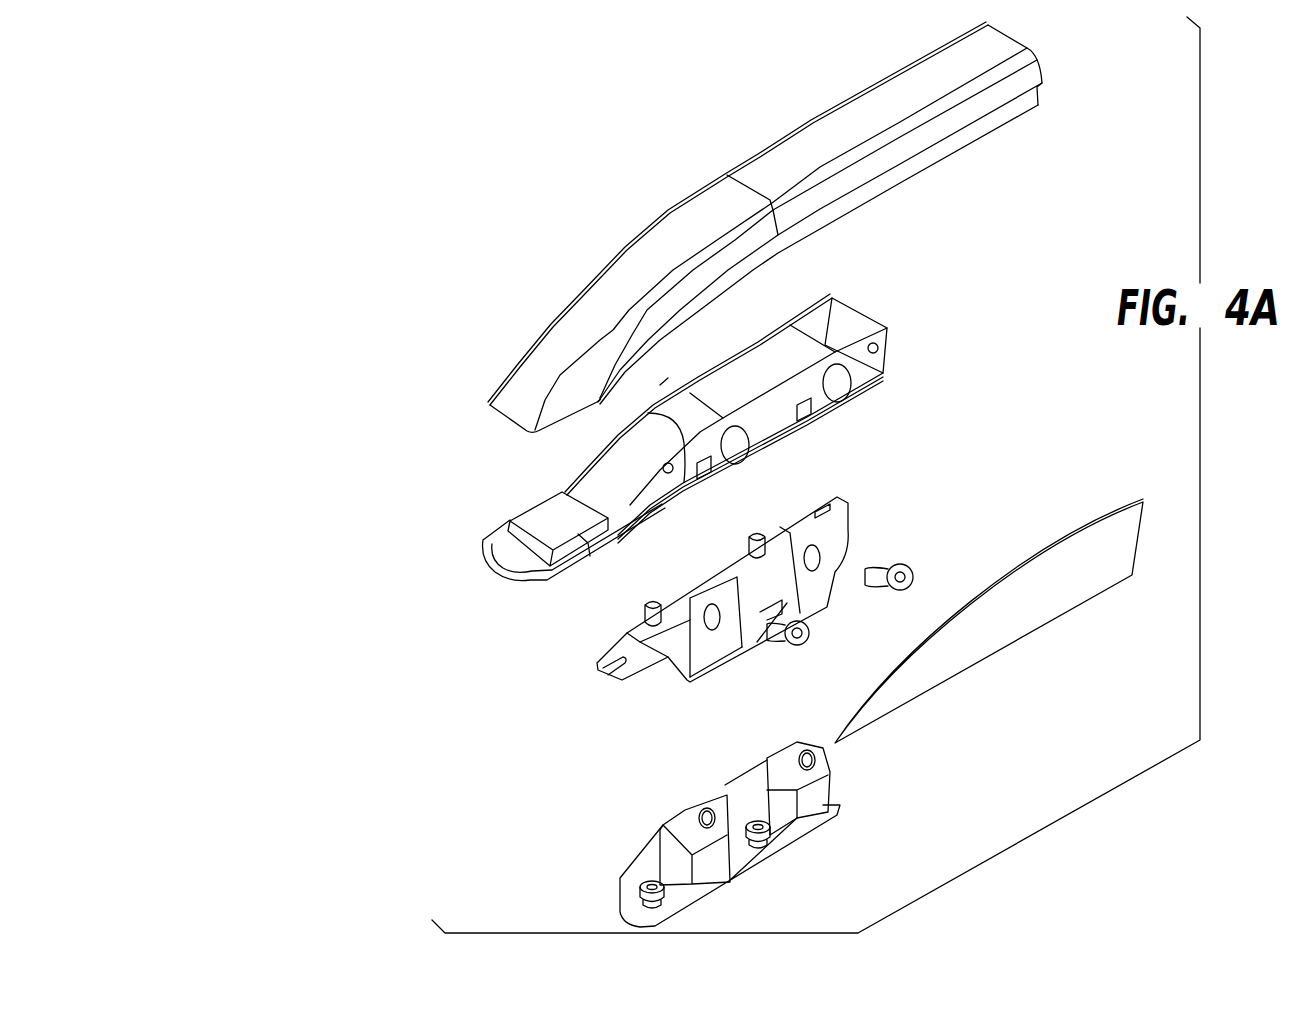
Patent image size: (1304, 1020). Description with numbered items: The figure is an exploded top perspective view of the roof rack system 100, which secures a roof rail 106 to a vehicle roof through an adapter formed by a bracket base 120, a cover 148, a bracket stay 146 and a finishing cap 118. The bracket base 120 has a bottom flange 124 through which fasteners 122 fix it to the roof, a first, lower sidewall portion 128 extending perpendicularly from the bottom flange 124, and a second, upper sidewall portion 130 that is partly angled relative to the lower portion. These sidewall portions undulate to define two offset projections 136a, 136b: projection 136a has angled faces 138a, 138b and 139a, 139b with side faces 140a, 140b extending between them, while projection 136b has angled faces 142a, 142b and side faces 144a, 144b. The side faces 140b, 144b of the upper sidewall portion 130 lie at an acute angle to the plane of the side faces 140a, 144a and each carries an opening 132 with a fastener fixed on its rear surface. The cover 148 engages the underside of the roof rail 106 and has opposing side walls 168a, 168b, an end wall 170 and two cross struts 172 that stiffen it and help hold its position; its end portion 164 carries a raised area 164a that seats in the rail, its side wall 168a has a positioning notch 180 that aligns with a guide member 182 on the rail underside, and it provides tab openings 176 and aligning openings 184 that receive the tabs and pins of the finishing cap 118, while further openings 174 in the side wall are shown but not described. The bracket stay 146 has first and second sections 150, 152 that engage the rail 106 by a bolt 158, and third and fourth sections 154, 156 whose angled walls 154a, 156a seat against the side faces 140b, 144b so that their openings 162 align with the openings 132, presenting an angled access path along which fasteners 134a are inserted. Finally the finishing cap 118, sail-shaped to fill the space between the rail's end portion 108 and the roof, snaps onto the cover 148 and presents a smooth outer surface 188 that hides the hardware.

The roof rack system 100 is at (375, 90).
The roof rail 106 is at (493, 378).
The end portion 108 is at (558, 336).
The finishing cap 118 is at (1093, 500).
The bracket base 120 is at (597, 899).
The fastener 122 is at (800, 835).
The bottom flange 124 is at (835, 815).
The first, lower sidewall portion 128 is at (870, 780).
The second, upper sidewall portion 130 is at (828, 750).
The opening 132 is at (808, 740).
The fastener 134a is at (915, 572).
The projection 136a is at (690, 820).
The projection 136b is at (790, 745).
The angled face 138a is at (650, 870).
The angled face 138b is at (665, 840).
The angled face 139a is at (760, 860).
The angled face 139b is at (725, 780).
The side face 140a is at (725, 865).
The side face 140b is at (715, 870).
The angled face 142a is at (790, 830).
The angled face 142b is at (765, 765).
The side face 144a is at (838, 795).
The side face 144b is at (855, 768).
The bracket stay 146 is at (598, 692).
The cover 148 is at (495, 602).
The first section 150 is at (675, 663).
The second section 152 is at (784, 592).
The third section 154 is at (735, 650).
The angled wall 154a is at (722, 650).
The fourth section 156 is at (825, 590).
The angled wall 156a is at (840, 527).
The bolt 158 is at (757, 530).
The opening 162 is at (712, 606).
The end portion 164 is at (485, 560).
The raised area 164a is at (530, 515).
The side wall 168a is at (890, 375).
The side wall 168b is at (770, 348).
The end wall 170 is at (845, 325).
The cross strut 172 is at (815, 310).
The frame hole 174 is at (848, 393).
The tab opening 176 is at (808, 420).
The positioning notch 180 is at (655, 425).
The guide member 182 is at (673, 330).
The aligning opening 184 is at (878, 347).
The outer surface 188 is at (1075, 583).